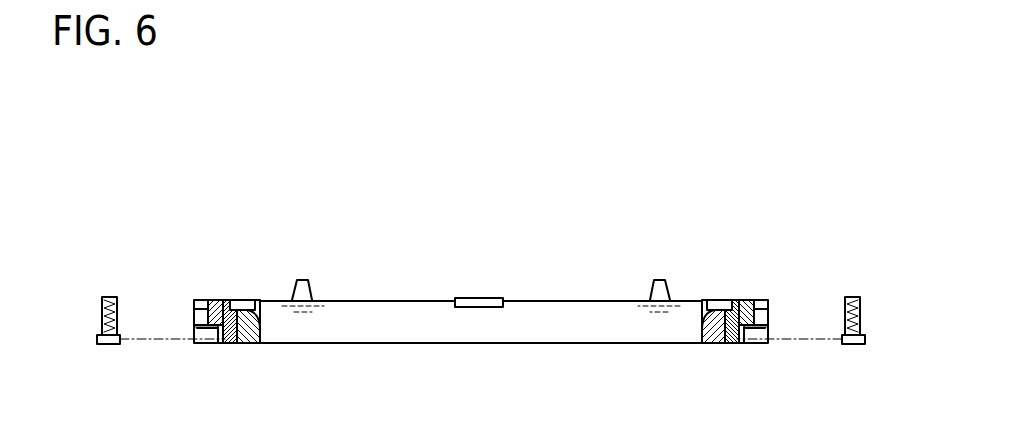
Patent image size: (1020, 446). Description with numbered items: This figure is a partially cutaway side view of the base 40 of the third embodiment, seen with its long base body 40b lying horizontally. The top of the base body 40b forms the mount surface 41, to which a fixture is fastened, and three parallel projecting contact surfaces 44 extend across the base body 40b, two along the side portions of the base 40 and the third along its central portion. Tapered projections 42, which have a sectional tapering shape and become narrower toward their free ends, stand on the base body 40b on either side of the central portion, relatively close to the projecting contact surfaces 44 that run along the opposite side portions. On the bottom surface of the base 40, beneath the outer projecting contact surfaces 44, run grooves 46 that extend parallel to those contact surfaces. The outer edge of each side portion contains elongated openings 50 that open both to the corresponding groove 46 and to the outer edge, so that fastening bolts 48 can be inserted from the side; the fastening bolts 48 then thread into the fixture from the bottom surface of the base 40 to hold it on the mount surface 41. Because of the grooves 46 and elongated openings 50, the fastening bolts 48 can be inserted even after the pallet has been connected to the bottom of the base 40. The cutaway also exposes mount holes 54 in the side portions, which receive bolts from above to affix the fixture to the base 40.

The base 40 is at (518, 345).
The base body 40b is at (373, 340).
The mount surface 41 is at (393, 301).
The tapered projection 42 is at (302, 279).
The projecting contact surface 44 is at (244, 299).
The groove 46 is at (214, 341).
The fastening bolt 48 is at (101, 316).
The elongated opening 50 is at (195, 313).
The mount hole 54 is at (230, 299).